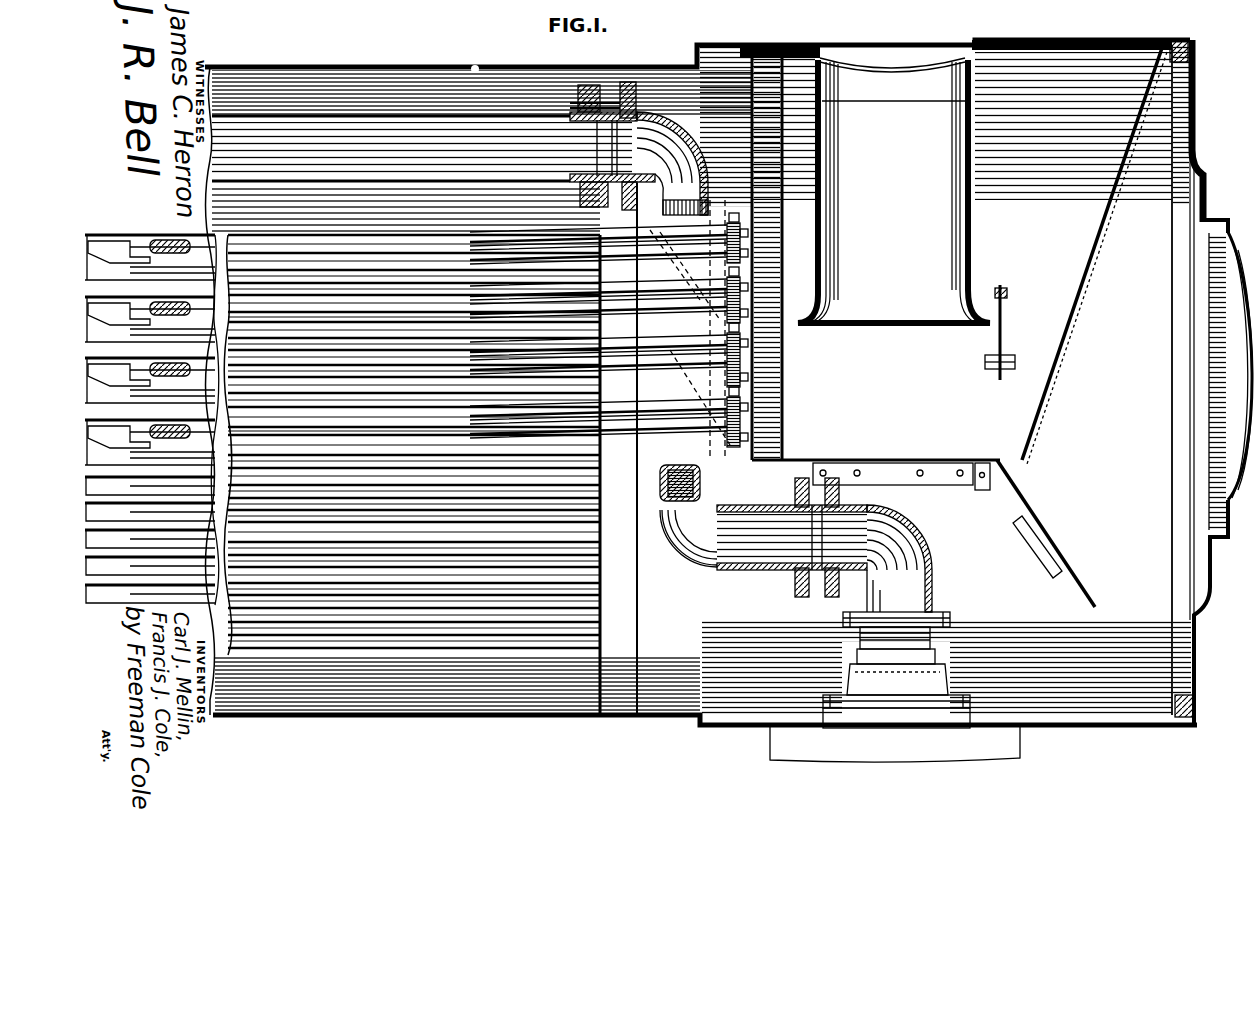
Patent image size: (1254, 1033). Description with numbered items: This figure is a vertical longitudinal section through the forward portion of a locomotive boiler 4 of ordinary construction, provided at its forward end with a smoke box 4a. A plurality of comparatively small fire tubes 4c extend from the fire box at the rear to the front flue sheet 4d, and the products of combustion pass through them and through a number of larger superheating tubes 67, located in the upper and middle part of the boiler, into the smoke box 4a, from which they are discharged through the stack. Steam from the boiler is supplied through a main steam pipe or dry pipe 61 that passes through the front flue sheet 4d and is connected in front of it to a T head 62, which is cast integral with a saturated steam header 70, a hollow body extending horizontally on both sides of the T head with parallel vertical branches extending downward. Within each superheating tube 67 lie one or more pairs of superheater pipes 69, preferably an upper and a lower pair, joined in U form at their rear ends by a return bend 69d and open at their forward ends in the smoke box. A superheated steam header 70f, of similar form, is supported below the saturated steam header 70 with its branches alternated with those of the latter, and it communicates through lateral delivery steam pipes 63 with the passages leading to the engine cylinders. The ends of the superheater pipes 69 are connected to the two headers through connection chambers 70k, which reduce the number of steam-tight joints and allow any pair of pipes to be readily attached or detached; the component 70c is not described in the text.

The locomotive boiler 4 is at (398, 66).
The smoke box 4a is at (1088, 40).
The fire tubes 4c is at (400, 648).
The front flue sheet 4d is at (600, 676).
The main steam pipe or dry pipe 61 is at (433, 146).
The T head 62 is at (667, 163).
The delivery steam pipe 63 is at (840, 620).
The superheating tubes 67 is at (372, 237).
The superheater pipes 69 is at (652, 262).
The return bend 69d is at (180, 240).
The saturated steam header 70 is at (706, 190).
The header connection 70c is at (742, 362).
The superheated steam header 70f is at (690, 462).
The connection chambers 70k is at (741, 262).